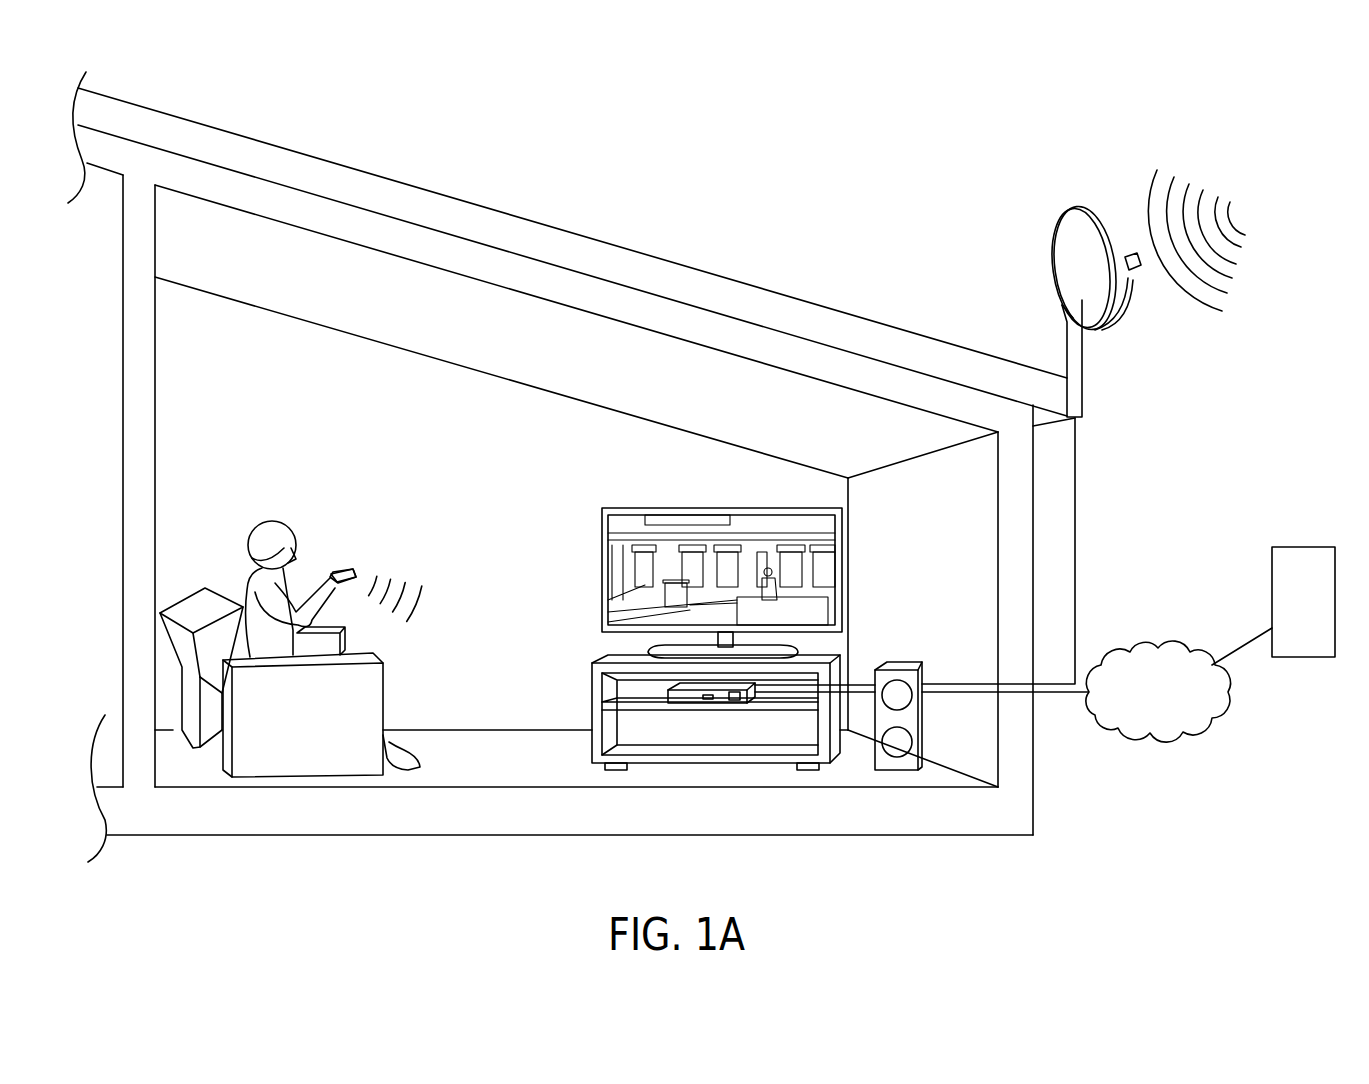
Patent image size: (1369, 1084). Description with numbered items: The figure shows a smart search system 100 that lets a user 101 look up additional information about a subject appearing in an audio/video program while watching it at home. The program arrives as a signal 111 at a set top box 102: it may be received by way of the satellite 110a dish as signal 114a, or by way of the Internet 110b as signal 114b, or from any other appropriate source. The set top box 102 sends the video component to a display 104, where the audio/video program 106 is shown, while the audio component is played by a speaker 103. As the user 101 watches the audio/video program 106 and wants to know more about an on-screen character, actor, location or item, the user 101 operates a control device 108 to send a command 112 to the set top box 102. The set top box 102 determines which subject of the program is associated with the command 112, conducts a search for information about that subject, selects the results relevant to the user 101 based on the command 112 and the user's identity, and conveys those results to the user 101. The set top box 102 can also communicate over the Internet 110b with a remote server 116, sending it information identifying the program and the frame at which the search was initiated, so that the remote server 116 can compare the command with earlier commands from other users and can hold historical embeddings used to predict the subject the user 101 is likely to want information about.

The system 100 is at (982, 108).
The user 101 is at (243, 578).
The set top box 102 is at (668, 691).
The speaker 103 is at (902, 664).
The display 104 is at (670, 508).
The audio/video program 106 is at (713, 538).
The control device 108 is at (343, 568).
The satellite 110a is at (1083, 232).
The Internet 110b is at (1145, 643).
The signal 111 is at (1217, 175).
The command 112 is at (452, 597).
The signal 114a is at (1076, 532).
The signal 114b is at (1062, 697).
The remote server 116 is at (1297, 547).